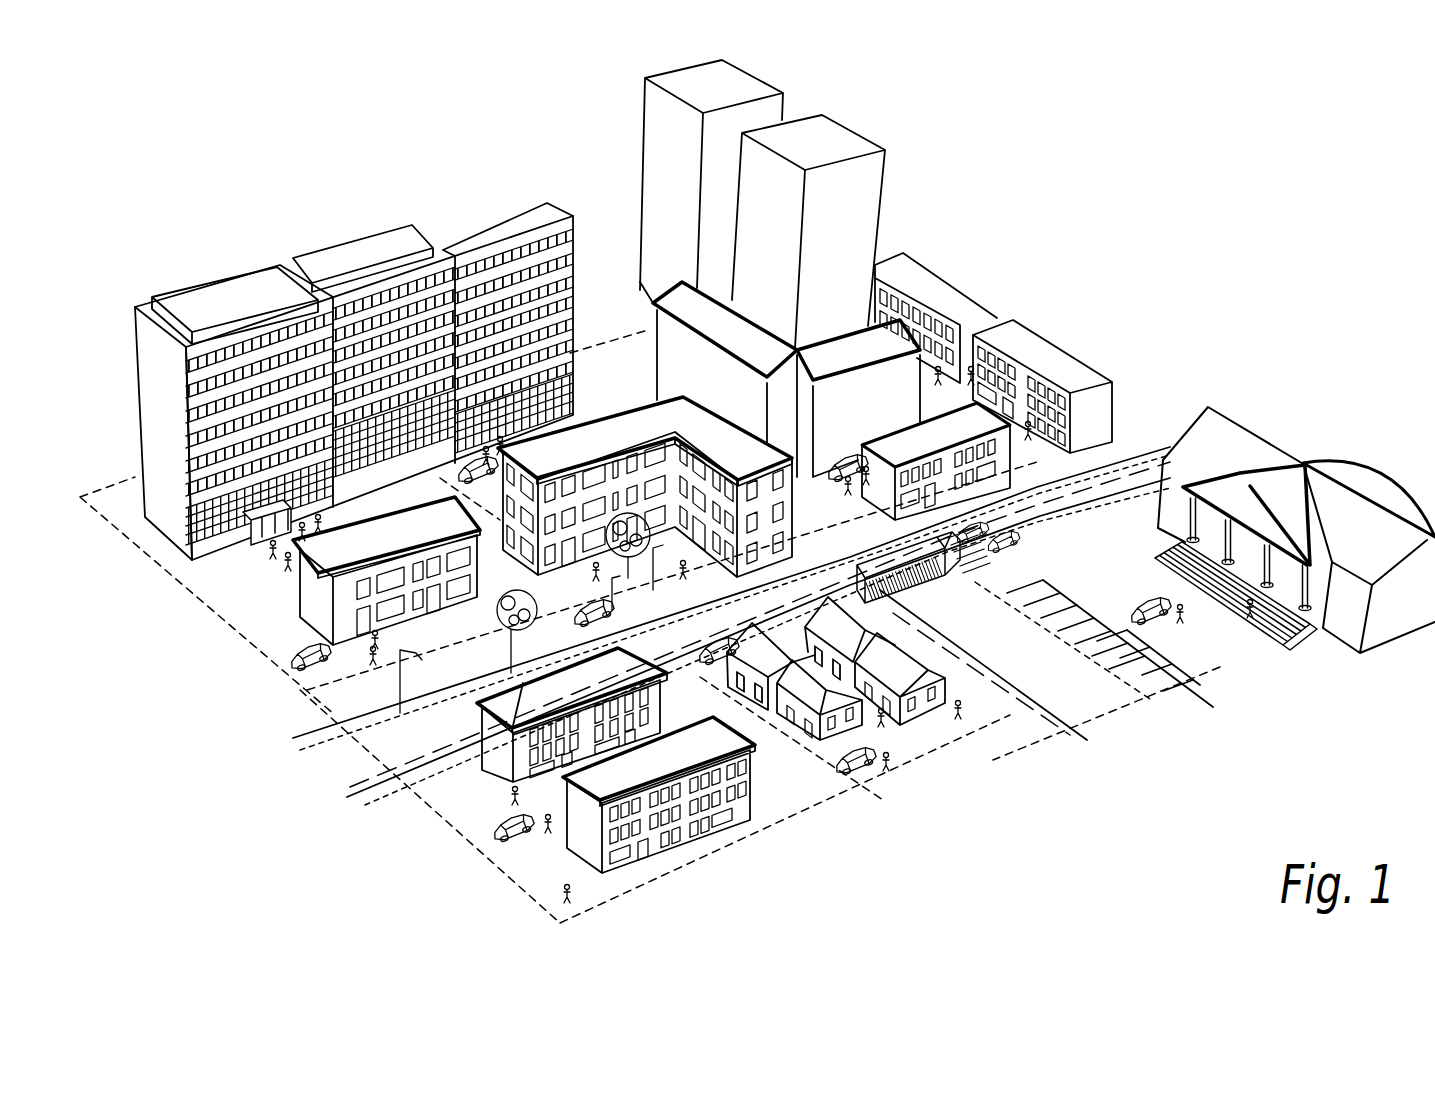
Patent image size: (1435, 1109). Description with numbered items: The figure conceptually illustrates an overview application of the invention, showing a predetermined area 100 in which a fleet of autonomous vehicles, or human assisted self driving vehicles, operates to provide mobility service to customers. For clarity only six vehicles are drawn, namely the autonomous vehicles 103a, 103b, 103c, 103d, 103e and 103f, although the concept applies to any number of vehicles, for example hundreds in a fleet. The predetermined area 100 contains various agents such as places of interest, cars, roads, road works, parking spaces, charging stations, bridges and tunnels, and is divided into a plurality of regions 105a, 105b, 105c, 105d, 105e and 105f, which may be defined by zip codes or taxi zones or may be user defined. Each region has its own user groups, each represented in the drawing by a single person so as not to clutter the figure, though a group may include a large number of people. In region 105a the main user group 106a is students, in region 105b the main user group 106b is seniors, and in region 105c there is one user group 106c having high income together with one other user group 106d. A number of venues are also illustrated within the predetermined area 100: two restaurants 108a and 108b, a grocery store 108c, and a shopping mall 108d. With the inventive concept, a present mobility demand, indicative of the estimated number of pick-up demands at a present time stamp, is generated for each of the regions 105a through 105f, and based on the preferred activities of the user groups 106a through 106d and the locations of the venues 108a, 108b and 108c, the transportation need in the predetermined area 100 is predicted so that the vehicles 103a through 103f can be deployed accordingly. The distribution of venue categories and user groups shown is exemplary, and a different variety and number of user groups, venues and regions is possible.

The predetermined area 100 is at (276, 172).
The autonomous vehicle 103a is at (1152, 618).
The autonomous vehicle 103b is at (858, 768).
The autonomous vehicle 103c is at (510, 833).
The autonomous vehicle 103d is at (458, 455).
The autonomous vehicle 103e is at (298, 658).
The autonomous vehicle 103f is at (848, 465).
The region 105a is at (270, 605).
The region 105b is at (632, 397).
The region 105c is at (923, 400).
The region 105d is at (560, 870).
The region 105e is at (950, 760).
The region 105f is at (1141, 588).
The user group 106a is at (497, 440).
The user group 106b is at (684, 565).
The user group 106c is at (938, 372).
The user group 106d is at (972, 372).
The restaurant 108a is at (920, 690).
The restaurant 108b is at (815, 712).
The grocery store 108c is at (715, 397).
The shopping mall 108d is at (1242, 443).